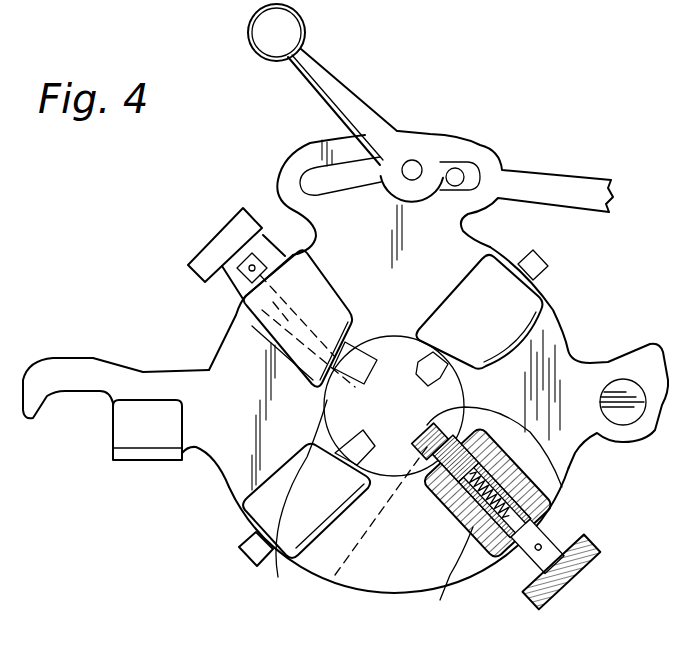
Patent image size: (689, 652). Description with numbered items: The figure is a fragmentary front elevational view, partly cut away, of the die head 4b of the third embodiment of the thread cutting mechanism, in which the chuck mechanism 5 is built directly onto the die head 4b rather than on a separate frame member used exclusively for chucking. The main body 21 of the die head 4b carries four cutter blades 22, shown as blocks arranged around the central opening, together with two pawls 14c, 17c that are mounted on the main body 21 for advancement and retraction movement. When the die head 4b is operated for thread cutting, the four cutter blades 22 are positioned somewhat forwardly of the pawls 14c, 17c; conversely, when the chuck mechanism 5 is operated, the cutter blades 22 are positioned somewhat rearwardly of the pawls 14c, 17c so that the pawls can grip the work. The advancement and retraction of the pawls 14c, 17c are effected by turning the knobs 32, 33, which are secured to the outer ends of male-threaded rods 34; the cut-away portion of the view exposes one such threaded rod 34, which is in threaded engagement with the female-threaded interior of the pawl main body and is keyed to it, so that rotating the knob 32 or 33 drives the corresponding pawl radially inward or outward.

The die head 4b is at (480, 139).
The chuck mechanism 5 is at (261, 190).
The knob 33 is at (224, 240).
The cutter blades 22 is at (278, 322).
The main body 21 is at (227, 482).
The pawl 14c is at (277, 553).
The pawl 17c is at (570, 472).
The male-threaded rod 34 is at (438, 531).
The knob 32 is at (592, 565).